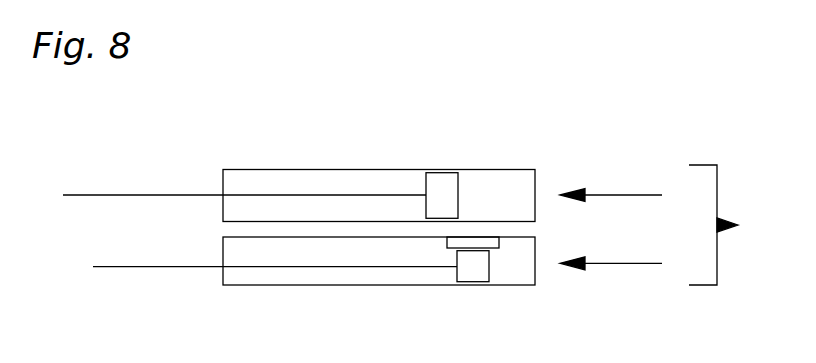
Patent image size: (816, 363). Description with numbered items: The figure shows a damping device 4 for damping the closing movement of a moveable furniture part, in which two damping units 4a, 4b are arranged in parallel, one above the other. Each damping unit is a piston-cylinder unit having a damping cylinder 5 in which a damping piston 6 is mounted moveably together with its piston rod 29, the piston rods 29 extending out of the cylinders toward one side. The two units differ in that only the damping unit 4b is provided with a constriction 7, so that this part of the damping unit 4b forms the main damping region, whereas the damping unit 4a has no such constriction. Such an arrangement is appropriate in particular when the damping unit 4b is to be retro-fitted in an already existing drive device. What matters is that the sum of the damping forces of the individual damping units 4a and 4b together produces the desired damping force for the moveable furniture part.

The damping device 4 is at (730, 225).
The damping unit 4a is at (634, 193).
The damping unit 4b is at (634, 262).
The damping cylinder 5 is at (360, 168).
The damping piston 6 is at (437, 190).
The constriction 7 is at (489, 244).
The piston rod 29 is at (173, 193).